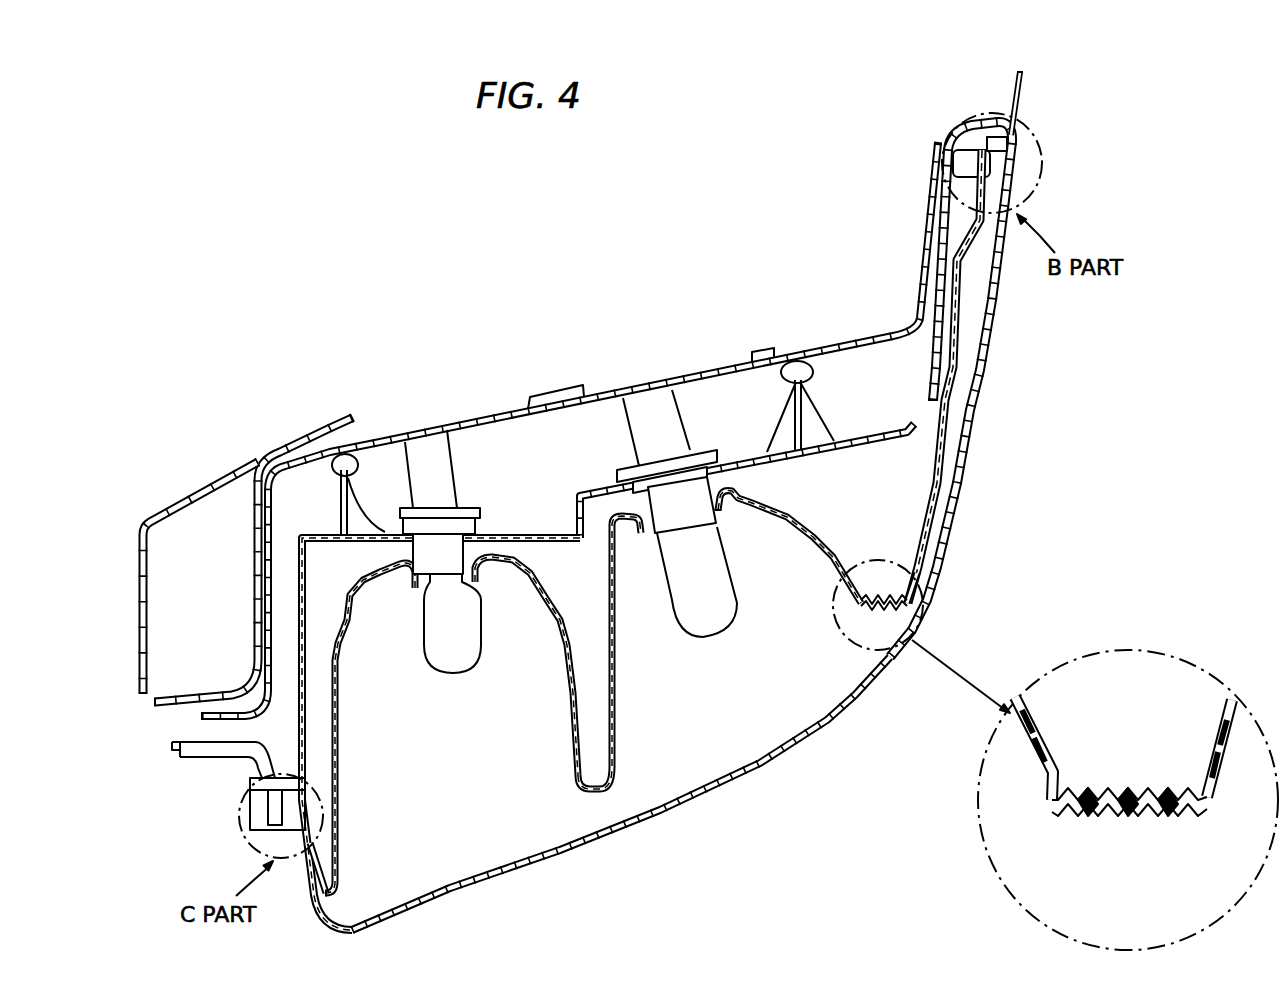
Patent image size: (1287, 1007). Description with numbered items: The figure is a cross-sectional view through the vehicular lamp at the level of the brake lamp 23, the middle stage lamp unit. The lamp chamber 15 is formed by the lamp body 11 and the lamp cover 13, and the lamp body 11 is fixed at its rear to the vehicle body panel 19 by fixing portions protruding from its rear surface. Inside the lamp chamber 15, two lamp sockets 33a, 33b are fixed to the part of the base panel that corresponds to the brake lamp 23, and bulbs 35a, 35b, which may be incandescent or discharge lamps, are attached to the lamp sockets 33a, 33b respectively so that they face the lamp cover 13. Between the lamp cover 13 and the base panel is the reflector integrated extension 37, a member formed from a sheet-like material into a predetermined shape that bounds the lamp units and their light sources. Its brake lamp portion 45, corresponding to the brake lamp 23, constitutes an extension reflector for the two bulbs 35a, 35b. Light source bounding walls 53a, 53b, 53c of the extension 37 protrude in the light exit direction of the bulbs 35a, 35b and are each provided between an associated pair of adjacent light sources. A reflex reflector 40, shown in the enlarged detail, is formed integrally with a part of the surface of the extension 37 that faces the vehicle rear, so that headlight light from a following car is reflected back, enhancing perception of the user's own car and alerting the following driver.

The lamp body 11 is at (850, 428).
The lamp cover 13 is at (950, 573).
The lamp chamber 15 is at (700, 757).
The vehicle body panel 19 is at (1015, 84).
The brake lamp 23 is at (821, 775).
The lamp socket 33a is at (452, 463).
The lamp socket 33b is at (686, 433).
The bulb 35a is at (465, 675).
The bulb 35b is at (704, 640).
The reflector integrated extension 37 is at (950, 484).
The reflex reflector 40 is at (1132, 808).
The brake lamp portion 45 is at (546, 617).
The light source bounding wall 53a is at (343, 853).
The light source bounding wall 53b is at (580, 768).
The light source bounding wall 53c is at (848, 596).